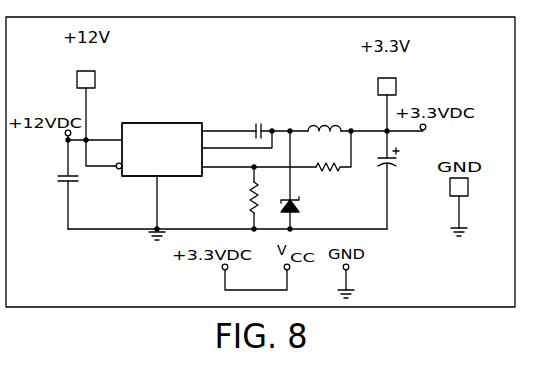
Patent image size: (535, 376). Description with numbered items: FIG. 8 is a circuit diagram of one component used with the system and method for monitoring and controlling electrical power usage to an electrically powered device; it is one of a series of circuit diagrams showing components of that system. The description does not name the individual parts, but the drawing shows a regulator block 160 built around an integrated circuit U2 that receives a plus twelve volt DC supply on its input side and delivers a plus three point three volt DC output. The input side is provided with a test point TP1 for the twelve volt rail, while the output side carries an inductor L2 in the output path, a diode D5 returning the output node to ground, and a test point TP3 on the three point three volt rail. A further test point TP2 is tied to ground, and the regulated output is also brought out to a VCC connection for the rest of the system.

The voltage regulator circuit 160 is at (140, 123).
The voltage regulator IC U2 is at (162, 149).
The test point +12V TP1 is at (87, 96).
The test point GND TP2 is at (474, 207).
The test point +3.3V TP3 is at (386, 95).
The inductor L2 is at (324, 118).
The zener diode D5 is at (305, 181).